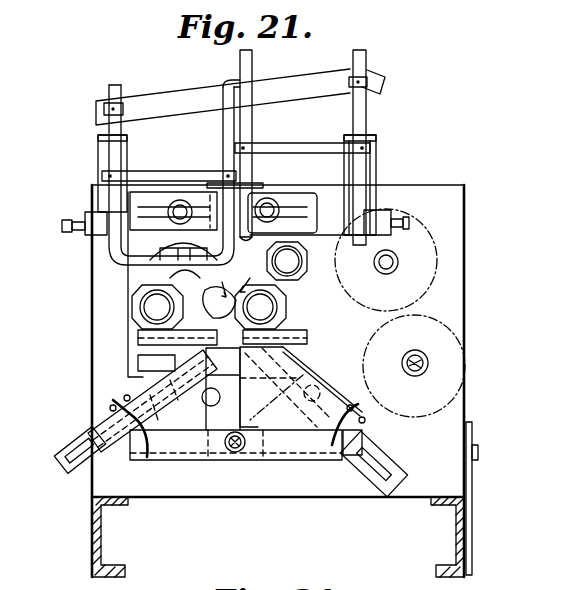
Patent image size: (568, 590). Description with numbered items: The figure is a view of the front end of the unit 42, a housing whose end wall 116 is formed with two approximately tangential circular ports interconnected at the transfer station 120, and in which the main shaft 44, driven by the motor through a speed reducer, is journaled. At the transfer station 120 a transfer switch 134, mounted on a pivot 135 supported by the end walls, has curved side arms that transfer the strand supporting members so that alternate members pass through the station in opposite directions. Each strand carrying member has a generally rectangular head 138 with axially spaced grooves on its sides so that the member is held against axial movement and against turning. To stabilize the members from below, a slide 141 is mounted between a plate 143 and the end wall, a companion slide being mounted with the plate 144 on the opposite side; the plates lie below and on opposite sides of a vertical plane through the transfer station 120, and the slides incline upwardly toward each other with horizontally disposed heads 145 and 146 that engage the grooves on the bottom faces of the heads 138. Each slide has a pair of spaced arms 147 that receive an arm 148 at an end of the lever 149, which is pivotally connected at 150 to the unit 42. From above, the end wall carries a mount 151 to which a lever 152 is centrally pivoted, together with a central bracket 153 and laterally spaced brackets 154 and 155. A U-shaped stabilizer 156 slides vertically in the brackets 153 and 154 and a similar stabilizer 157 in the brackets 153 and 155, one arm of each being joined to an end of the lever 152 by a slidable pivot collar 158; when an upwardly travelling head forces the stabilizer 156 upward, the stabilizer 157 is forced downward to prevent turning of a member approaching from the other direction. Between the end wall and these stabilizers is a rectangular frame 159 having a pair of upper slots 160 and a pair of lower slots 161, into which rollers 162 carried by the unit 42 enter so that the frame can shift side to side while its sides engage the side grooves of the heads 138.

The unit 42 is at (468, 217).
The main shaft 44 is at (426, 360).
The end wall 116 is at (447, 288).
The transfer station 120 is at (287, 261).
The transfer switch 134 is at (180, 276).
The pivot 135 is at (217, 452).
The head 138 is at (138, 315).
The slide 141 is at (72, 465).
The plate 143 is at (178, 408).
The plate 144 is at (296, 413).
The head 145 is at (172, 340).
The head 146 is at (299, 335).
The arm 147 is at (115, 408).
The arm 148 is at (360, 430).
The lever 149 is at (263, 452).
The pivot 150 is at (236, 453).
The mount 151 is at (241, 123).
The lever 152 is at (173, 97).
The bracket 153 is at (252, 183).
The bracket 154 is at (102, 155).
The bracket 155 is at (369, 165).
The U-shaped stabilizer 156 is at (113, 243).
The stabilizer 157 is at (367, 122).
The slidable pivot collar 158 is at (104, 108).
The rectangular frame 159 is at (309, 283).
The upper slot 160 is at (291, 210).
The lower slot 161 is at (143, 363).
The roller 162 is at (181, 200).